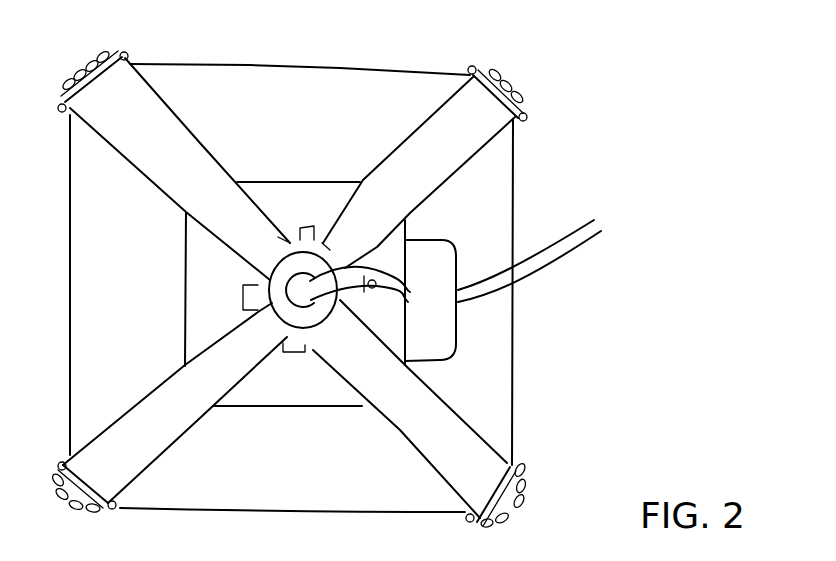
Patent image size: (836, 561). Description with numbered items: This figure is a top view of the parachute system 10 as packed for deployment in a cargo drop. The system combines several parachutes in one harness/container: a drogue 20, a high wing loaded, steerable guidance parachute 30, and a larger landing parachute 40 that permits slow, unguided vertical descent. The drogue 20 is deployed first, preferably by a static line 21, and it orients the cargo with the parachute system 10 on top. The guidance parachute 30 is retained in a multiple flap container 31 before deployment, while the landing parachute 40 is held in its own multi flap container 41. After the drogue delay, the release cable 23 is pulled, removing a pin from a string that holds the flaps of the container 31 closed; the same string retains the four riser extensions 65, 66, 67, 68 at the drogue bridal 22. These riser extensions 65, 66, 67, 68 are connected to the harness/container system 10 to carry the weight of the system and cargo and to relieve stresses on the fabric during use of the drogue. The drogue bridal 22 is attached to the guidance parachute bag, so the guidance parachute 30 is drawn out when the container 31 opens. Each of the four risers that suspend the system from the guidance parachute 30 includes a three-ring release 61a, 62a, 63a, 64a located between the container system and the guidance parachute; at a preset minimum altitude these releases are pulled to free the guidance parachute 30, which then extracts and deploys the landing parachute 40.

The parachute system 10 is at (605, 139).
The drogue 20 is at (440, 316).
The static line 21 is at (564, 248).
The drogue bridal 22 is at (413, 242).
The release cable 23 is at (369, 296).
The guidance parachute 30 is at (296, 393).
The multiple flap container 31 is at (302, 216).
The landing parachute 40 is at (300, 472).
The multi flap container 41 is at (304, 138).
The 3-ring release 61a is at (92, 514).
The 3-ring release 62a is at (522, 502).
The 3-ring release 63a is at (509, 67).
The 3-ring release 64a is at (103, 52).
The riser extension 65 is at (184, 412).
The riser extension 66 is at (426, 426).
The riser extension 67 is at (432, 178).
The riser extension 68 is at (186, 182).